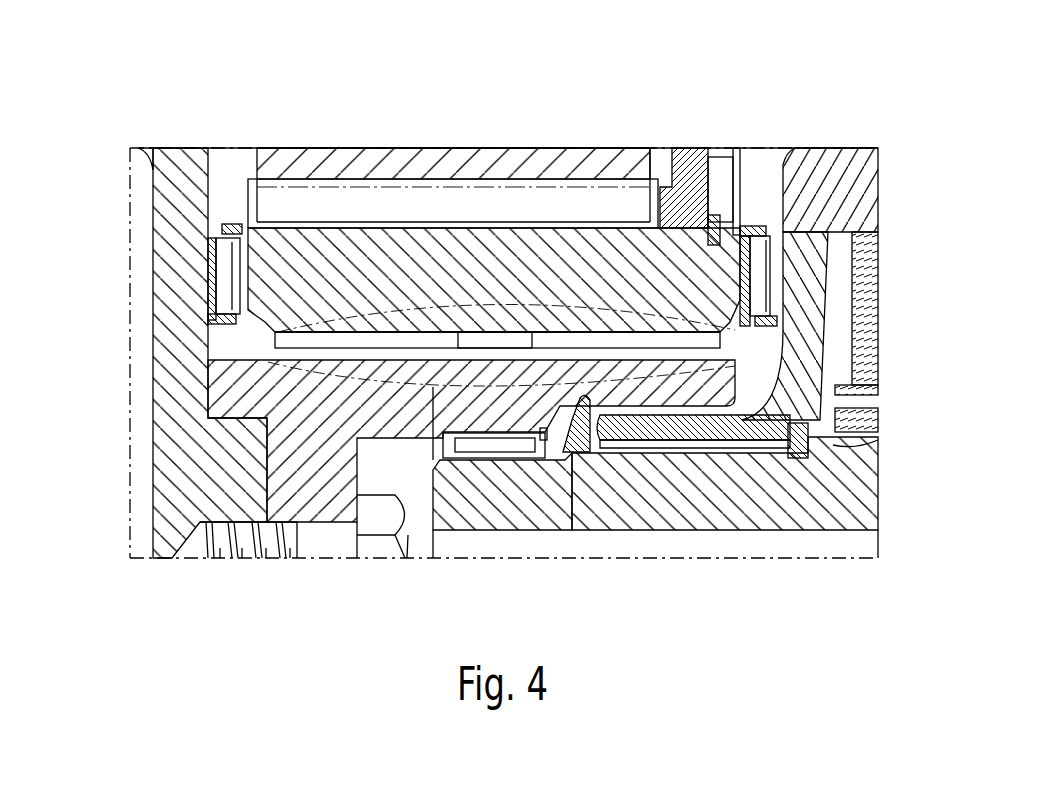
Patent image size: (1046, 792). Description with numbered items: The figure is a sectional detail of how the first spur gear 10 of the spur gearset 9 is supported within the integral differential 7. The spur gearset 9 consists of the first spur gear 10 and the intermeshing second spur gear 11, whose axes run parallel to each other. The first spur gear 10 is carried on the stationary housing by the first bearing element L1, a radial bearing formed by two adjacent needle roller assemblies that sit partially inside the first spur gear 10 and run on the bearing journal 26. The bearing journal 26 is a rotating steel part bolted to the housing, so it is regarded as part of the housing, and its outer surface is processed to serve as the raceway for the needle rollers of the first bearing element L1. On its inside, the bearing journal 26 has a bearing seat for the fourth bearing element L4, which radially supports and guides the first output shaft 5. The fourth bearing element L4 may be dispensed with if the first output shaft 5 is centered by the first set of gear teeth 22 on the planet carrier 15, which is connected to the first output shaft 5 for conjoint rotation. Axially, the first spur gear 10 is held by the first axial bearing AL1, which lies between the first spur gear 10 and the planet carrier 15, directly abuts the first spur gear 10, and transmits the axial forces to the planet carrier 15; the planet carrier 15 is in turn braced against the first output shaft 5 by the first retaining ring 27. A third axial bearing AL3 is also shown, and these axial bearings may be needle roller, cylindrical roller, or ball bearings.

The first output shaft 5 is at (830, 488).
The integral differential 7 is at (604, 106).
The spur gearset 9 is at (521, 115).
The first spur gear 10 is at (315, 285).
The second spur gear 11 is at (338, 165).
The planet carrier 15 is at (805, 273).
The first set of gear teeth 22 is at (576, 402).
The bearing journal 26 is at (318, 474).
The first retaining ring 27 is at (805, 458).
The first axial bearing AL1 is at (765, 195).
The third axial bearing AL3 is at (228, 195).
The first bearing element L1 is at (433, 387).
The fourth bearing element L4 is at (485, 472).